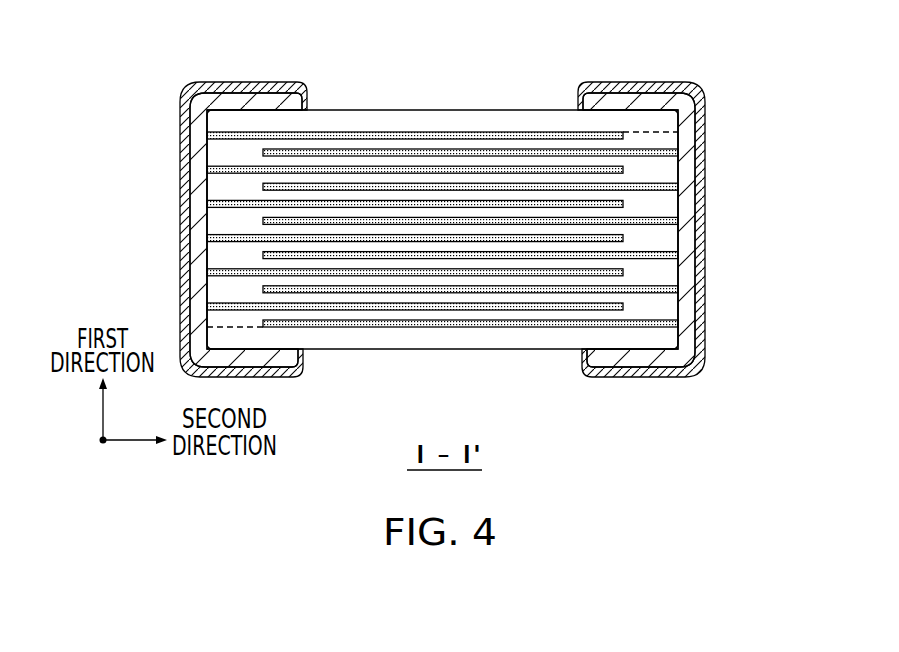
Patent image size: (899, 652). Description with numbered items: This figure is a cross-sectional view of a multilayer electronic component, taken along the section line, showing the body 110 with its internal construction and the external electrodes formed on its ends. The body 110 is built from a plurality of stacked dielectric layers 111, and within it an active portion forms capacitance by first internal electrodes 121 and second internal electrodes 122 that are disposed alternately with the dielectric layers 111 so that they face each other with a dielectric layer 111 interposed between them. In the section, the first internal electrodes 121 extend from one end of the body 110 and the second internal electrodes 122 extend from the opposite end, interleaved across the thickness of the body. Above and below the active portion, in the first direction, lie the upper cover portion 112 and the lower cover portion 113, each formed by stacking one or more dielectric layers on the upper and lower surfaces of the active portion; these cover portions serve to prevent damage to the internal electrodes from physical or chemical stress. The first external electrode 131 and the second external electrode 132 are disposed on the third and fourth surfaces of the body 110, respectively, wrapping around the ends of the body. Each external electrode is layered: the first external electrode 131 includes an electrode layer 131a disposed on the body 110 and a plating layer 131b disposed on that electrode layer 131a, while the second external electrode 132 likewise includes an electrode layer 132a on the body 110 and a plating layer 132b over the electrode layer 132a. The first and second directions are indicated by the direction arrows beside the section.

The body 110 is at (375, 108).
The dielectric layer 111 is at (328, 182).
The upper cover portion 112 is at (448, 123).
The lower cover portion 113 is at (360, 334).
The first internal electrode 121 is at (512, 135).
The second internal electrode 122 is at (568, 152).
The first external electrode 131 is at (166, 229).
The first electrode layer 131a is at (198, 164).
The first plating layer 131b is at (192, 190).
The second external electrode 132 is at (719, 229).
The second electrode layer 132a is at (690, 138).
The second plating layer 132b is at (703, 162).